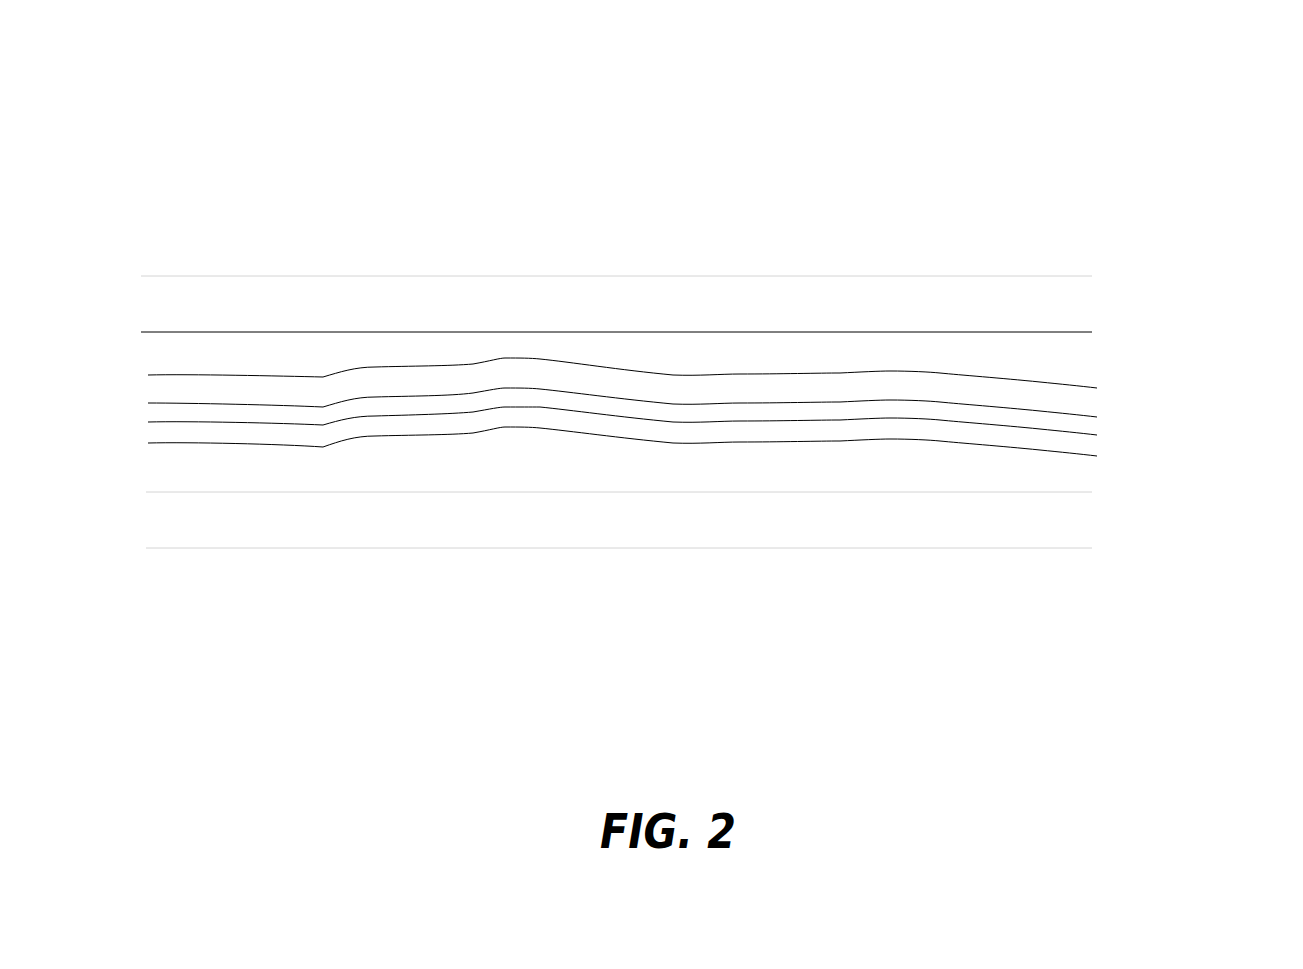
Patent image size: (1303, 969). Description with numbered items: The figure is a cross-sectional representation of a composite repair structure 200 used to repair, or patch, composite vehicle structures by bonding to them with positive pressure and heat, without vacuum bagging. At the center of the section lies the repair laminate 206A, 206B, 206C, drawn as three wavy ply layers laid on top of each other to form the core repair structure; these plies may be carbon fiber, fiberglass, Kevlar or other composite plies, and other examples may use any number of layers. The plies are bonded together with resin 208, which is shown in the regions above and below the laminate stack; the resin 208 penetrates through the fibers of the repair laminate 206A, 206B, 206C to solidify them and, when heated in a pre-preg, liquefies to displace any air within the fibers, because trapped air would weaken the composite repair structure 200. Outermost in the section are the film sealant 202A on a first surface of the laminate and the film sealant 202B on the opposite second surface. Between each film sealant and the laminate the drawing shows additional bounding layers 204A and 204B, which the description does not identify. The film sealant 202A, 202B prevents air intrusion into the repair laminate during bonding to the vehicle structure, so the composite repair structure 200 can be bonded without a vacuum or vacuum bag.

The composite repair structure 200 is at (222, 116).
The film sealant 202A is at (937, 293).
The film sealant 202B is at (910, 549).
The first adhesive layer 204A is at (758, 332).
The second adhesive layer 204B is at (722, 492).
The repair laminate 206A is at (1078, 402).
The repair laminate 206B is at (1082, 427).
The repair laminate 206C is at (1083, 452).
The resin 208 is at (1077, 361).